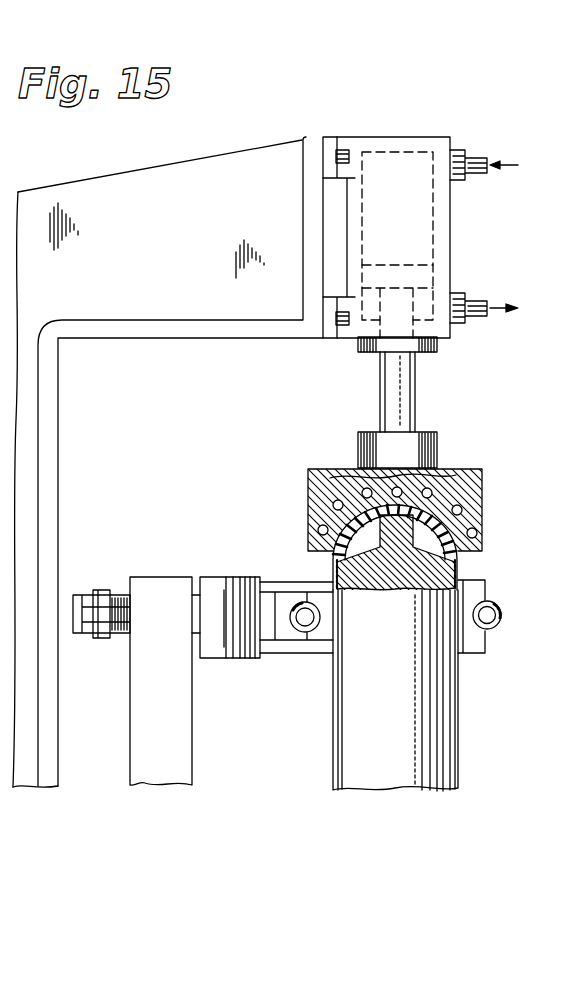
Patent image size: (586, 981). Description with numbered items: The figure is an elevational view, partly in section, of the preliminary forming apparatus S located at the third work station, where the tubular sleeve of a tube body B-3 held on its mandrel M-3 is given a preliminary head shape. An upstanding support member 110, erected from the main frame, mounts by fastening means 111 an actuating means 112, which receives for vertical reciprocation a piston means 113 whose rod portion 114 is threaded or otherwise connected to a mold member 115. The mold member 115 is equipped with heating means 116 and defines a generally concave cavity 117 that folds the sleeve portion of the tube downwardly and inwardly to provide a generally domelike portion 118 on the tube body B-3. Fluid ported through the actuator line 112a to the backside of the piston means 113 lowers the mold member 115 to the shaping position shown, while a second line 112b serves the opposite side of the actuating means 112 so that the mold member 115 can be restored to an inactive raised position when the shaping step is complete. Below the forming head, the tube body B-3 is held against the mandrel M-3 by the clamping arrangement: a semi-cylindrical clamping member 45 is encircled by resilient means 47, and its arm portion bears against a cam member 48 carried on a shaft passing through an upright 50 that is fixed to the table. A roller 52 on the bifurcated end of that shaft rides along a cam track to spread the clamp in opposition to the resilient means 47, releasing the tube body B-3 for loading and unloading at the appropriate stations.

The upstanding support member 110 is at (53, 408).
The fastening means 111 is at (340, 150).
The actuating means 112 is at (447, 233).
The actuator line 112a is at (472, 158).
The fluid port 112b is at (477, 303).
The piston means 113 is at (391, 263).
The rod portion 114 is at (390, 393).
The mold member 115 is at (479, 493).
The heating means 116 is at (318, 529).
The concave cavity 117 is at (466, 516).
The domelike portion 118 is at (440, 512).
The preliminary forming apparatus S is at (468, 419).
The mandrel M-3 is at (390, 570).
The tube body B-3 is at (450, 721).
The semi-cylindrical clamping member 45 is at (478, 590).
The resilient means 47 is at (501, 614).
The cam member 48 is at (213, 588).
The upright 50 is at (140, 698).
The roller 52 is at (73, 600).